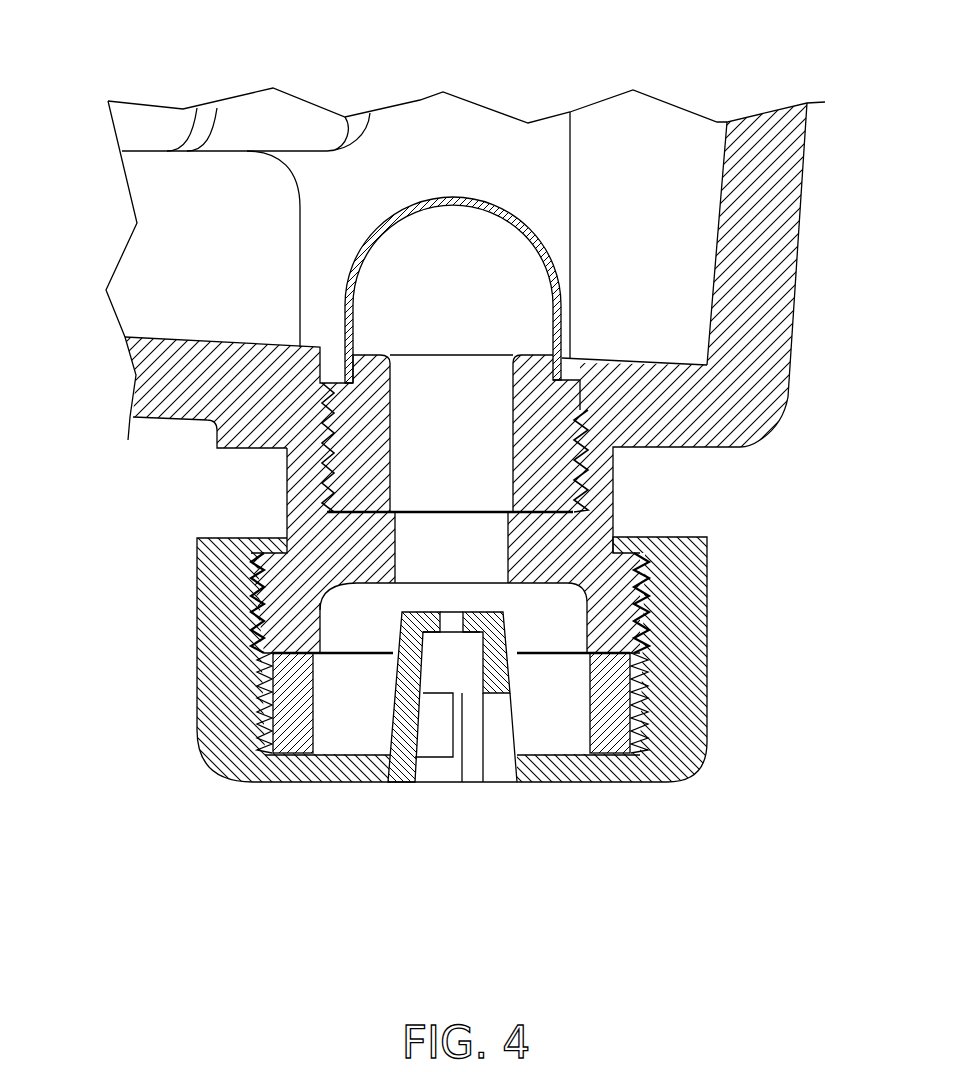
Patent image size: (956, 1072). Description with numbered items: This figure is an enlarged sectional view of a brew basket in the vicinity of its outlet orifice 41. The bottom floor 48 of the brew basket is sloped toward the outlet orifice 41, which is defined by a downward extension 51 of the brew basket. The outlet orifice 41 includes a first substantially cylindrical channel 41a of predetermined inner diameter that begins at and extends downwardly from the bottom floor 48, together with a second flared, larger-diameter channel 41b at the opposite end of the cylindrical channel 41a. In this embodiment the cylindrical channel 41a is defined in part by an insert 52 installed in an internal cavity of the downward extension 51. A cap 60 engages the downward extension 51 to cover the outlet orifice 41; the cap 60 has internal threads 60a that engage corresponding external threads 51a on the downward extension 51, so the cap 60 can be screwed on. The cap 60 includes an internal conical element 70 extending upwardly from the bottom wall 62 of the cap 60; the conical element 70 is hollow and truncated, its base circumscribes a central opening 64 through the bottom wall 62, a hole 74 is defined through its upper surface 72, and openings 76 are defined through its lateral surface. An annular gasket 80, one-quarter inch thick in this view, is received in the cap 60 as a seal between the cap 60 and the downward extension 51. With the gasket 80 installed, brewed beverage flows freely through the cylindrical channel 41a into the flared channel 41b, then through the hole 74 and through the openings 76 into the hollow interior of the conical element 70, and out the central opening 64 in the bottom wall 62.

The outlet orifice 41 is at (510, 390).
The first substantially cylindrical channel 41a is at (512, 527).
The second flared channel 41b is at (600, 603).
The bottom floor 48 is at (227, 340).
The downward extension 51 is at (300, 527).
The external threads 51a is at (262, 607).
The insert 52 is at (345, 445).
The cap 60 is at (197, 712).
The internal threads 60a is at (250, 727).
The bottom wall 62 is at (615, 772).
The central opening 64 is at (485, 768).
The internal conical element 70 is at (630, 717).
The upper surface 72 is at (653, 577).
The hole 74 is at (452, 622).
The openings 76 is at (441, 740).
The annular gasket 80 is at (282, 690).